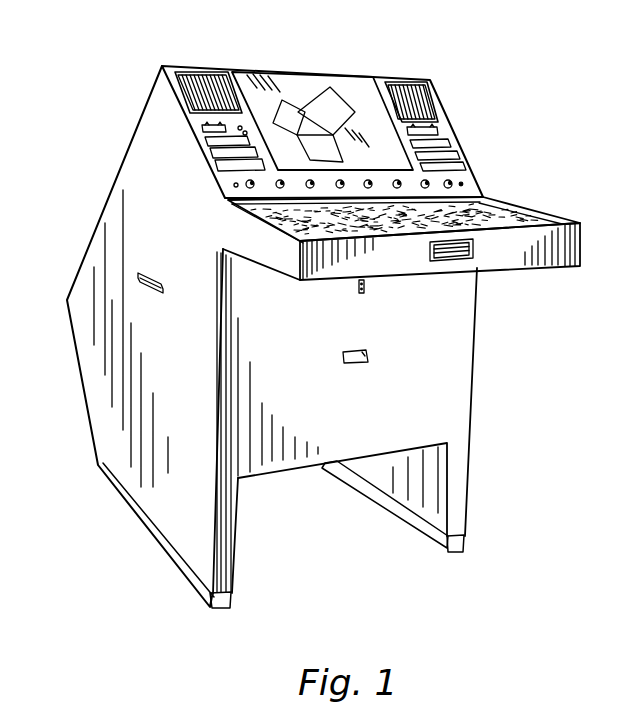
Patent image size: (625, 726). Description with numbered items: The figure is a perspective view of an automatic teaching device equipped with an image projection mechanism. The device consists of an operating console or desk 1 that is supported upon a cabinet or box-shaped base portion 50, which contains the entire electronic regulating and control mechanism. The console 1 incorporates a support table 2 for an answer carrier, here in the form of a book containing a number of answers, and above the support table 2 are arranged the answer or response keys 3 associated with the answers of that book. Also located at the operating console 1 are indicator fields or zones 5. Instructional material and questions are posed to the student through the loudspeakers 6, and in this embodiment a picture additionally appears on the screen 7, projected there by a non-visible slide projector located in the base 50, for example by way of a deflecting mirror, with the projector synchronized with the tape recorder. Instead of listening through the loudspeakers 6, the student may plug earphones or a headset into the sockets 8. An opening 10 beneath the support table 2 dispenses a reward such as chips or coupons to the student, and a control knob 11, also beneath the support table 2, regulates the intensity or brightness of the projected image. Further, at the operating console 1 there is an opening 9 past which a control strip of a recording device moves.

The operating console 1 is at (371, 337).
The support table 2 is at (513, 211).
The answer keys 3 is at (462, 178).
The indicator fields 5 is at (447, 145).
The loudspeakers 6 is at (205, 88).
The screen 7 is at (303, 95).
The sockets 8 is at (468, 185).
The opening 9 is at (458, 166).
The opening 10 is at (369, 356).
The control knob 11 is at (364, 289).
The base portion 50 is at (96, 362).